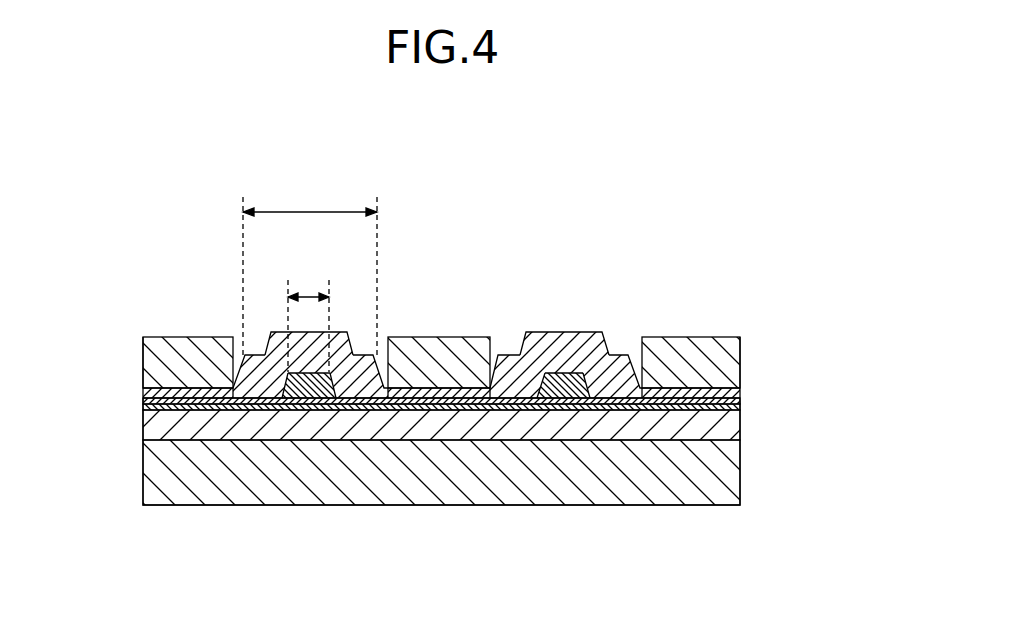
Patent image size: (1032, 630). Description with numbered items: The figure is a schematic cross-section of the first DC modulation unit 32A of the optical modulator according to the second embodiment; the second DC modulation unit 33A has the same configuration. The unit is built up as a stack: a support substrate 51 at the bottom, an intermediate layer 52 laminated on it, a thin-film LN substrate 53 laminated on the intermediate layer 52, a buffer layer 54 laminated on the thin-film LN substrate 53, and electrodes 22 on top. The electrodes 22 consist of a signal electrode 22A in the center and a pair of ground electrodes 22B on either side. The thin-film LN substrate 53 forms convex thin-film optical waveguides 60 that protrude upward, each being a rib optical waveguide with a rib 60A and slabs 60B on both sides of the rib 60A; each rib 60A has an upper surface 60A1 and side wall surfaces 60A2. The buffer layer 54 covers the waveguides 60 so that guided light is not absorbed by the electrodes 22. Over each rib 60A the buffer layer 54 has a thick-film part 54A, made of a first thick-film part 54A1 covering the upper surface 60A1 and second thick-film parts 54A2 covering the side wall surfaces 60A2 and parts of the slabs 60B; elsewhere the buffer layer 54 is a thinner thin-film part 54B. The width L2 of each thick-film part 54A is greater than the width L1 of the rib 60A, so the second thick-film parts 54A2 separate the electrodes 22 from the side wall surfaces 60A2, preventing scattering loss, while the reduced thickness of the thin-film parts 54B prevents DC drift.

The support substrate 51 is at (712, 468).
The intermediate layer 52 is at (735, 428).
The thin-film LN substrate 53 is at (735, 400).
The buffer layer 54 is at (449, 366).
The thick-film part 54A is at (453, 366).
The first thick-film part 54A1 is at (267, 333).
The second thick-film part 54A2 is at (430, 366).
The thin-film part 54B is at (173, 395).
The thin-film optical waveguide 60 is at (441, 387).
The rib 60A is at (442, 373).
The upper surface of rib 60A1 is at (290, 372).
The side wall surface of rib 60A2 is at (284, 390).
The slab 60B is at (165, 411).
The electrode 22 is at (438, 344).
The signal electrode 22A is at (442, 337).
The ground electrode 22B is at (165, 373).
The first DC modulation unit 32A is at (438, 366).
The second DC modulation unit 33A is at (438, 366).
The width of rib L1 is at (313, 296).
The width of thick-film part L2 is at (310, 270).